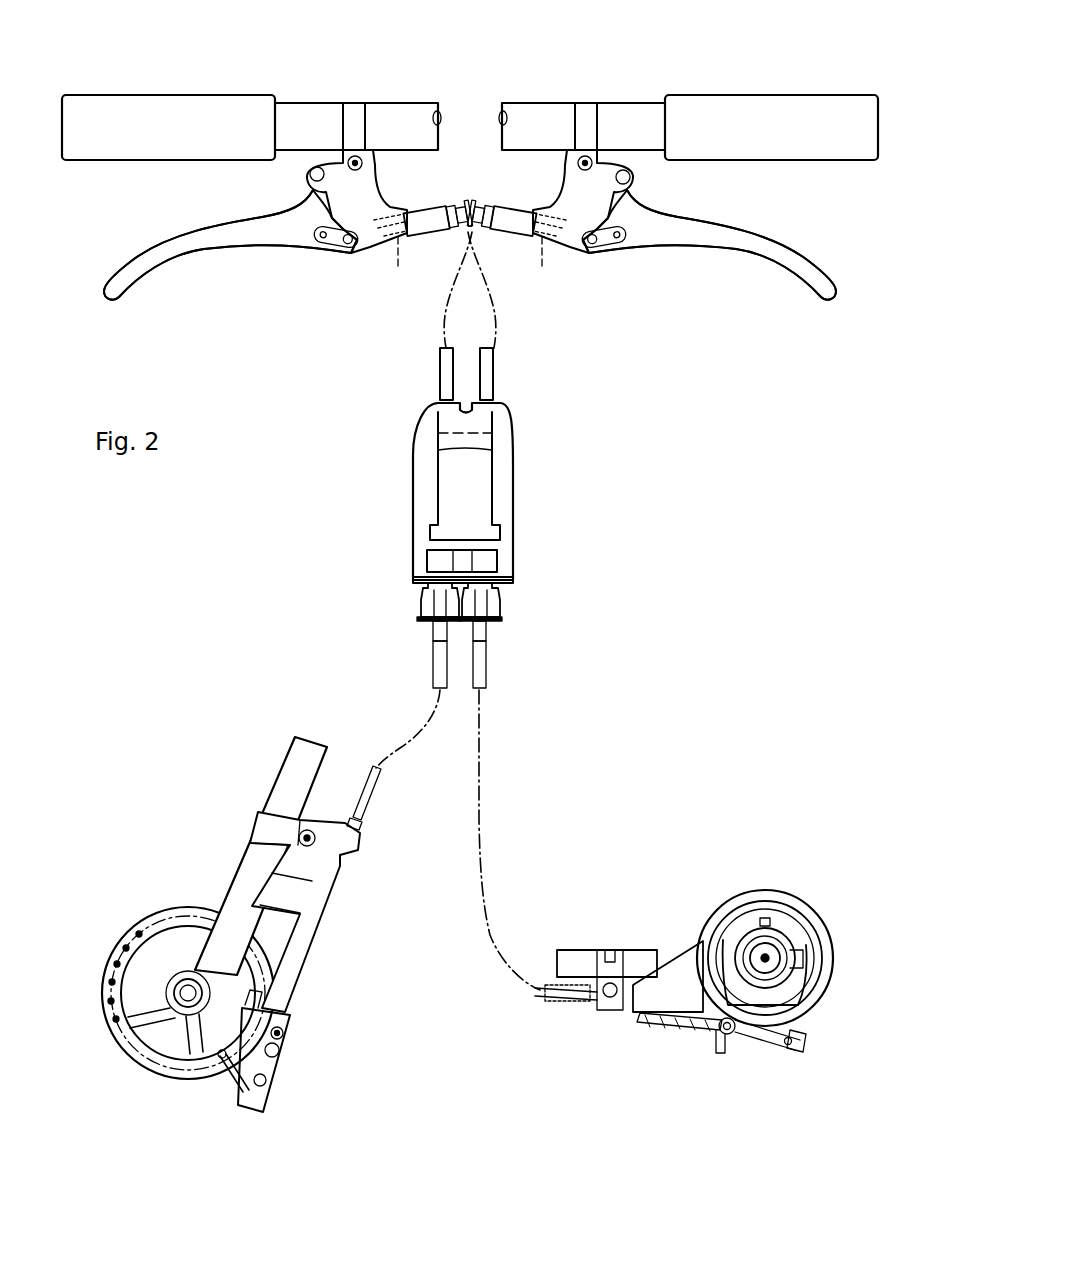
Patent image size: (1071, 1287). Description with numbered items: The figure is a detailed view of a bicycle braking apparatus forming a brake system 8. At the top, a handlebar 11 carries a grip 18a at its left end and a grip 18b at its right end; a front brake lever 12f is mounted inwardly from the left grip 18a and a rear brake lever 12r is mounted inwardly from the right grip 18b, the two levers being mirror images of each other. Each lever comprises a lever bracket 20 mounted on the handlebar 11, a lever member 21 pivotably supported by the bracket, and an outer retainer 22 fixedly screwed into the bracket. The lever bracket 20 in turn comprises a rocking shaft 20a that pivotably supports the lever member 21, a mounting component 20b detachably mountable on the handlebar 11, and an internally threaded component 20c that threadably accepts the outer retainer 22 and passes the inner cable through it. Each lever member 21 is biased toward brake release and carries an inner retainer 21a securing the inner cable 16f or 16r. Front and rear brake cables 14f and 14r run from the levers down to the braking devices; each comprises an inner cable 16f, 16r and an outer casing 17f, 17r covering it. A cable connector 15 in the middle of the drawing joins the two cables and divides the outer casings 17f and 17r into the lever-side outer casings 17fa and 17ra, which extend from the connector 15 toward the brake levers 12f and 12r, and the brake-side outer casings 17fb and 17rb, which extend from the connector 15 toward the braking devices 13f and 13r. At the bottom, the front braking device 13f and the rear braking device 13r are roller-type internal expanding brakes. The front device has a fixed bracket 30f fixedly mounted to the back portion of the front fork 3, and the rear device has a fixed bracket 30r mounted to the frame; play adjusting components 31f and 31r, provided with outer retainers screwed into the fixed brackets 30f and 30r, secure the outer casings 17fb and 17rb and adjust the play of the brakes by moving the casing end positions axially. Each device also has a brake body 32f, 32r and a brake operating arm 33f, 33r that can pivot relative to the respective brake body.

The front fork 3 is at (246, 856).
The brake system 8 is at (524, 493).
The handlebar 11 is at (522, 125).
The front brake lever 12f is at (205, 254).
The rear brake lever 12r is at (707, 254).
The front braking device 13f is at (162, 1078).
The rear braking device 13r is at (748, 1046).
The front brake cable 14f is at (432, 676).
The rear brake cable 14r is at (489, 691).
The cable connector 15 is at (570, 521).
The front inner cable 16f is at (413, 722).
The rear inner cable 16r is at (484, 740).
The front outer casing 17f is at (425, 605).
The rear outer casing 17r is at (501, 642).
The front lever-side outer casing 17fa is at (438, 376).
The rear lever-side outer casing 17ra is at (495, 377).
The front brake-side outer casing 17fb is at (432, 652).
The rear brake-side outer casing 17rb is at (487, 660).
The left grip 18a is at (181, 104).
The right grip 18b is at (752, 108).
The lever bracket 20 is at (358, 108).
The rocking shaft 20a is at (302, 172).
The mounting component 20b is at (346, 105).
The internally threaded component 20c is at (397, 270).
The lever member 21 is at (157, 244).
The inner retainer 21a is at (332, 246).
The outer retainer 22 is at (417, 214).
The front fixed bracket 30f is at (270, 952).
The rear fixed bracket 30r is at (672, 972).
The front play adjusting component 31f is at (372, 816).
The rear play adjusting component 31r is at (582, 988).
The front brake body 32f is at (188, 996).
The rear brake body 32r is at (765, 973).
The front brake operating arm 33f is at (229, 1068).
The rear brake operating arm 33r is at (772, 1023).